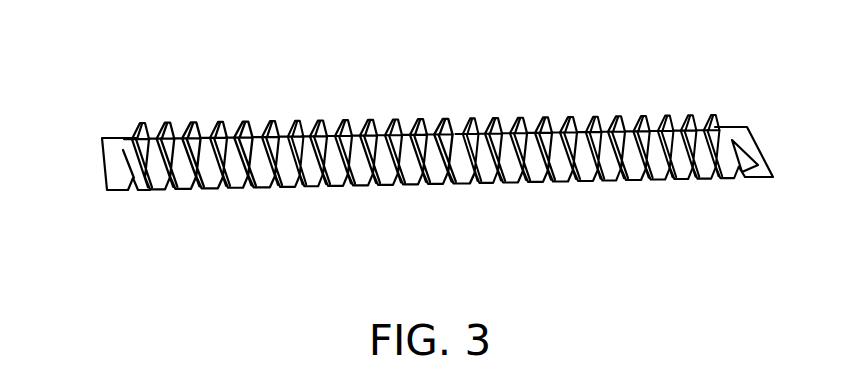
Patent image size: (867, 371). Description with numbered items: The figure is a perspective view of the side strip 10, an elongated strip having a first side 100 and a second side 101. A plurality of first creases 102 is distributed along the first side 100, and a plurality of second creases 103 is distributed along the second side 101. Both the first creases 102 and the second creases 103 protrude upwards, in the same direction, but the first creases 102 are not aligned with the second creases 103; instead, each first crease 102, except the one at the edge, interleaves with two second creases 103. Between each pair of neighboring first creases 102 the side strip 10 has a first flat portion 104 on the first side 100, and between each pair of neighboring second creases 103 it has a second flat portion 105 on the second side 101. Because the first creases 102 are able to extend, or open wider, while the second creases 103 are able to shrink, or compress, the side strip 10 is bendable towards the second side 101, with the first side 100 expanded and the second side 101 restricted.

The side strip 10 is at (458, 80).
The first side 100 is at (117, 193).
The second side 101 is at (118, 128).
The first creases 102 is at (188, 192).
The second creases 103 is at (165, 128).
The first flat portion 104 is at (253, 192).
The second flat portion 105 is at (260, 128).